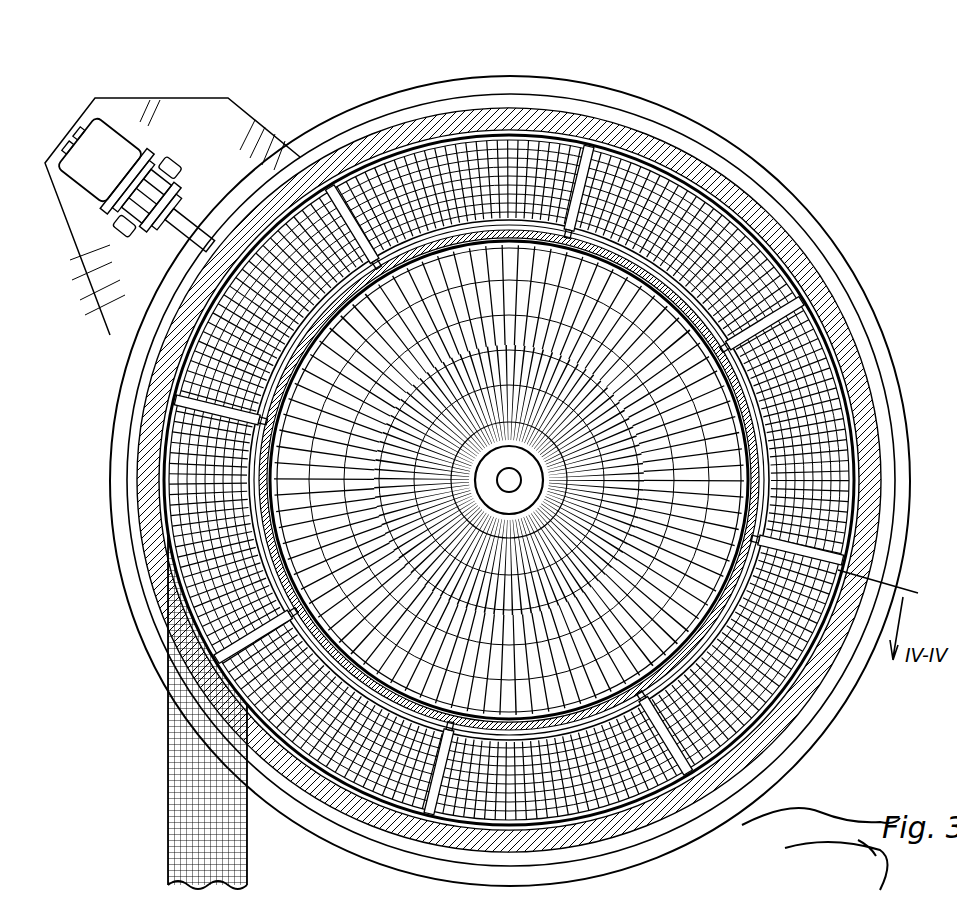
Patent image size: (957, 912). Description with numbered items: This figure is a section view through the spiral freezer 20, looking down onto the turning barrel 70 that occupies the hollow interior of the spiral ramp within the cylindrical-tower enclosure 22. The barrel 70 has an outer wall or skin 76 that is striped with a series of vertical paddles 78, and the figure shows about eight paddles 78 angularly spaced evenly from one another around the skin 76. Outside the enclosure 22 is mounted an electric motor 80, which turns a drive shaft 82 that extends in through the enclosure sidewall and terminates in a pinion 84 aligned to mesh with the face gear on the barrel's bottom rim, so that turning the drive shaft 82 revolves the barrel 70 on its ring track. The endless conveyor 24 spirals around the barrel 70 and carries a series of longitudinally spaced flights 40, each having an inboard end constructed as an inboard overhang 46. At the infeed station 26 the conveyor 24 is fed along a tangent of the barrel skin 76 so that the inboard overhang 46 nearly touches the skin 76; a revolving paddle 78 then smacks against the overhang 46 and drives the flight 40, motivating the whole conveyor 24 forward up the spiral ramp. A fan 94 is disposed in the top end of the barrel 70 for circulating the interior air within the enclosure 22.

The spiral freezer 20 is at (304, 50).
The cylindrical-tower enclosure 22 is at (526, 118).
The endless conveyor belt 24 is at (466, 198).
The infeed station 26 is at (194, 820).
The flight 40 is at (800, 542).
The inboard overhang 46 is at (441, 733).
The turning barrel 70 is at (688, 652).
The outer skin 76 is at (555, 748).
The paddle 78 is at (721, 334).
The electric motor 80 is at (88, 172).
The drive shaft 82 is at (268, 314).
The pinion 84 is at (322, 338).
The fan 94 is at (553, 305).